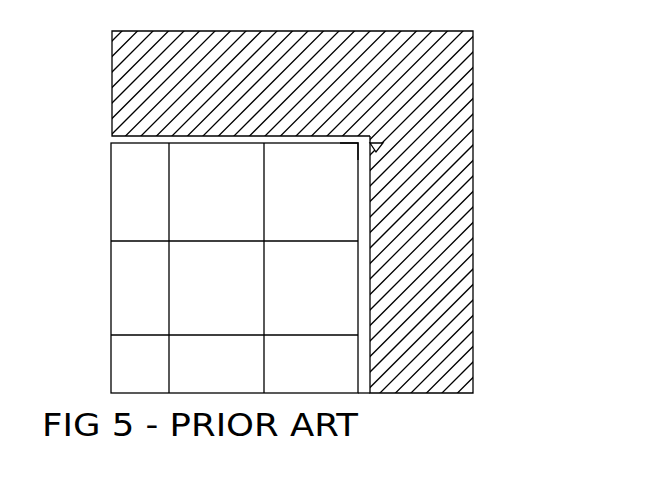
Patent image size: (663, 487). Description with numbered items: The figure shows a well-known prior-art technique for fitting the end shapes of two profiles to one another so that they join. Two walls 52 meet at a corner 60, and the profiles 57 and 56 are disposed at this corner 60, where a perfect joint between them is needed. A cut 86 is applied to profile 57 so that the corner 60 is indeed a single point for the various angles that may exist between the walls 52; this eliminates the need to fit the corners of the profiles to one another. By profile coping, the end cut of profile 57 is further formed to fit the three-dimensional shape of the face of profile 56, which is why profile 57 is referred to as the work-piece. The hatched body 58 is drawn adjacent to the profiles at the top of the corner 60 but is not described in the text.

The walls 52 is at (453, 223).
The profile 56 is at (153, 142).
The profile (work-piece) 57 is at (358, 316).
The edge insert 58 is at (382, 122).
The corner 60 is at (358, 145).
The cut 86 is at (372, 148).